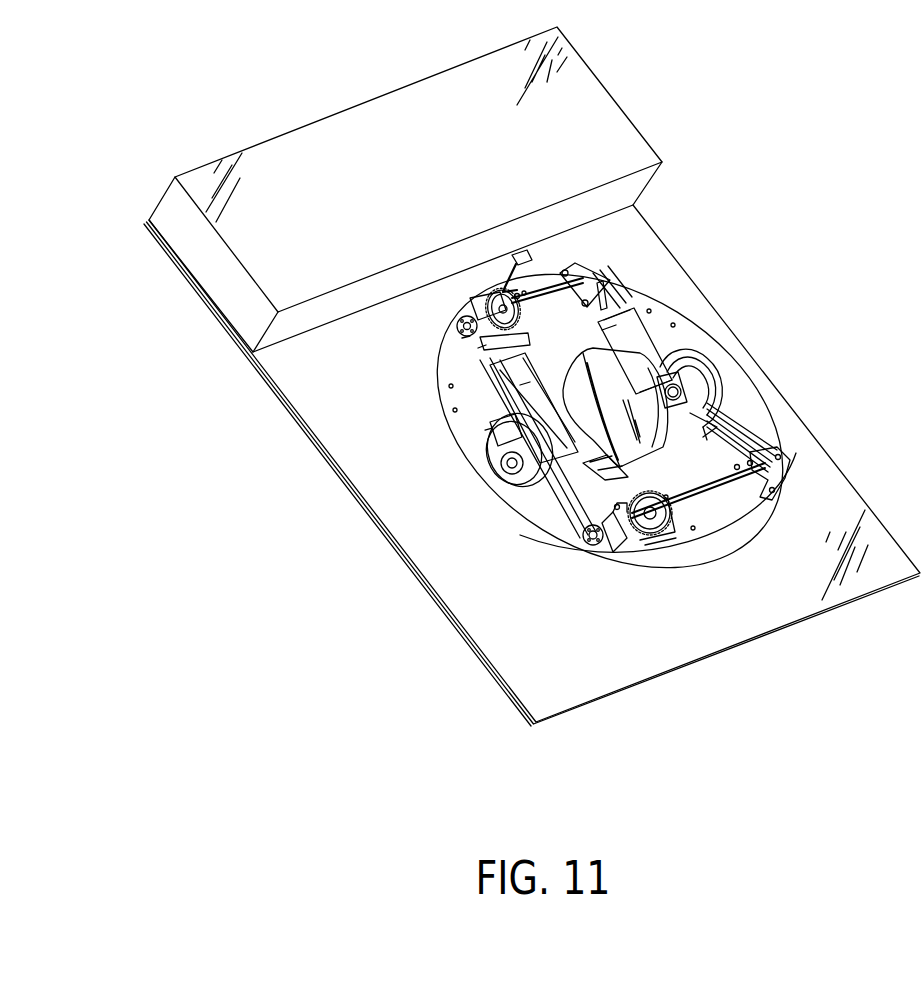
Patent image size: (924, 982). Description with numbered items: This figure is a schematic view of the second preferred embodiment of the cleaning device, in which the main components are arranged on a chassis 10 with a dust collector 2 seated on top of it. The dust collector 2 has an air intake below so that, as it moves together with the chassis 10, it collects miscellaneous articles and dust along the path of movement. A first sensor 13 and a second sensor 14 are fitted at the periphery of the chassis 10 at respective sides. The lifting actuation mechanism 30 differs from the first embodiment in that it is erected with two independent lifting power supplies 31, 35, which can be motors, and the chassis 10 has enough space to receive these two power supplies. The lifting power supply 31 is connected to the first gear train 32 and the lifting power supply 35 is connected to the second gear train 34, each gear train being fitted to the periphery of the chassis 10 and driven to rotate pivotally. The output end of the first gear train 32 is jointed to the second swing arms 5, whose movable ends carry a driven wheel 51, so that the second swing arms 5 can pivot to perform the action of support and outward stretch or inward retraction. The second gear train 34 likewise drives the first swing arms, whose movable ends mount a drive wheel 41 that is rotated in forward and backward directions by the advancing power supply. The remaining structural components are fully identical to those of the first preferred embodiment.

The dust collector 2 is at (623, 373).
The second swing arm 5 is at (780, 446).
The chassis 10 is at (731, 377).
The first sensor 13 is at (515, 255).
The second sensor 14 is at (517, 475).
The lifting actuation mechanism 30 is at (532, 376).
The lifting power supply 31 is at (577, 512).
The first gear train 32 is at (613, 555).
The second gear train 34 is at (482, 348).
The lifting power supply 35 is at (520, 385).
The drive wheel 41 is at (682, 368).
The driven wheel 51 is at (720, 388).